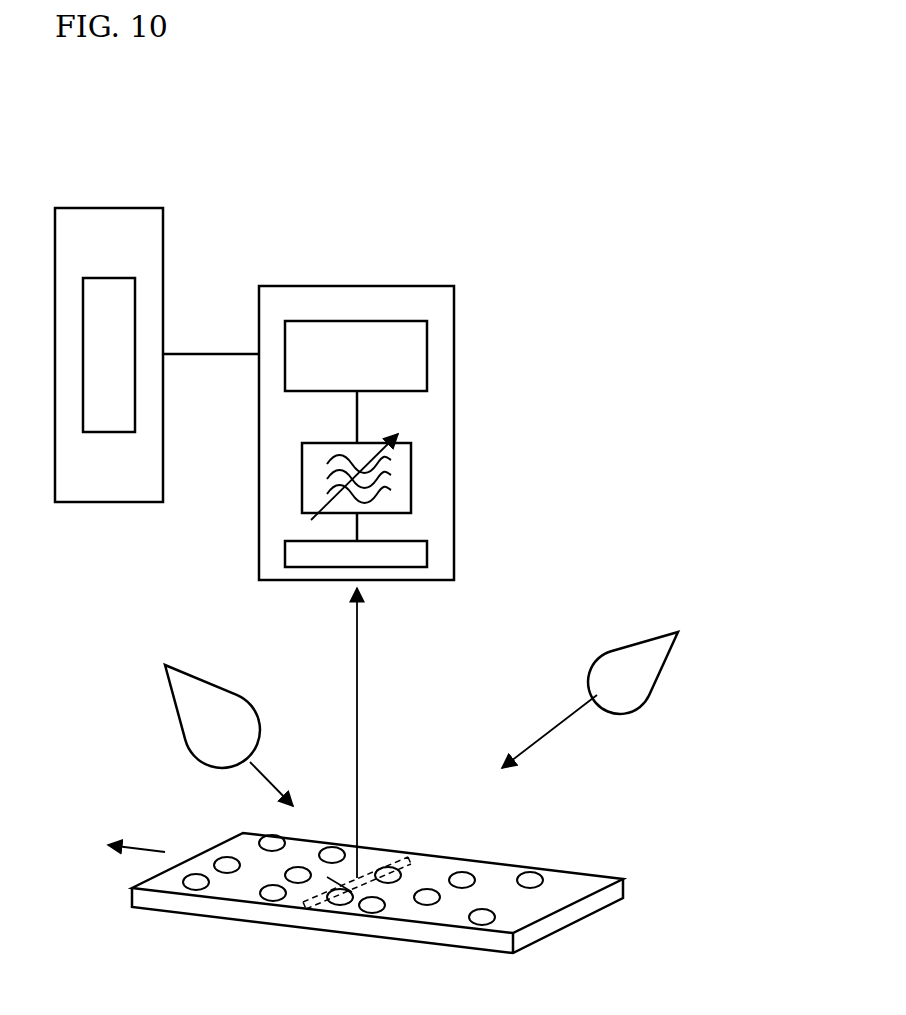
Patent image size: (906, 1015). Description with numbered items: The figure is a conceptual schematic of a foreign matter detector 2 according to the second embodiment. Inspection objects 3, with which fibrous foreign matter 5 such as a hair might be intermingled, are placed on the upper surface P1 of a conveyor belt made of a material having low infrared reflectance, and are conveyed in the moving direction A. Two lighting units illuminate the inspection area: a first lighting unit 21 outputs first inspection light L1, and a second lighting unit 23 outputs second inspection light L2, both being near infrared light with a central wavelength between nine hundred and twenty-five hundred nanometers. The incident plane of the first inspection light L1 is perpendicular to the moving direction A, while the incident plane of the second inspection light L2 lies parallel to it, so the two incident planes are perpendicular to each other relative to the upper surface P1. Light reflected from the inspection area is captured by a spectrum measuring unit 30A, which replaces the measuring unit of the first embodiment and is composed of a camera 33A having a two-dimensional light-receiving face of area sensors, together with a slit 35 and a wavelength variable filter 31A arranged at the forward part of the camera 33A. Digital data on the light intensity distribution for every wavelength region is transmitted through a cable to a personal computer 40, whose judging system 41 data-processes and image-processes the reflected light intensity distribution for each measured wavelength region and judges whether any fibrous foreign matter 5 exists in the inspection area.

The foreign matter detector 2 is at (703, 290).
The personal computer 40 is at (163, 232).
The judging system 41 is at (135, 296).
The spectrum measuring unit 30A is at (454, 291).
The camera 33A is at (427, 352).
The wavelength variable filter 31A is at (411, 476).
The slit 35 is at (427, 551).
The first lighting unit 21 is at (177, 710).
The second lighting unit 23 is at (660, 632).
The first inspection light L1 is at (278, 790).
The second inspection light L2 is at (548, 737).
The inspection object 3 is at (477, 878).
The fibrous foreign matter 5 is at (427, 877).
The upper surface of the belt P1 is at (237, 845).
The moving direction A is at (136, 836).